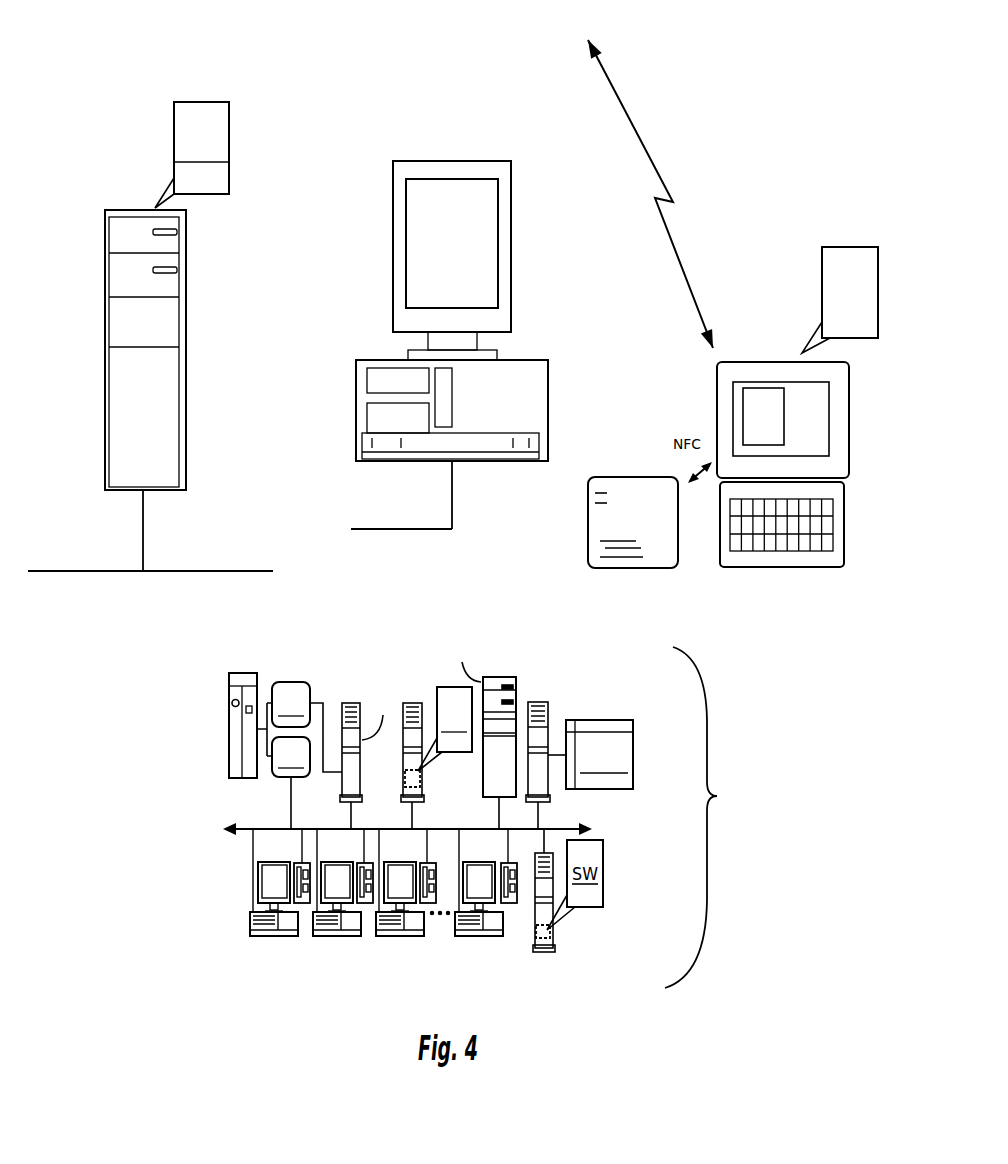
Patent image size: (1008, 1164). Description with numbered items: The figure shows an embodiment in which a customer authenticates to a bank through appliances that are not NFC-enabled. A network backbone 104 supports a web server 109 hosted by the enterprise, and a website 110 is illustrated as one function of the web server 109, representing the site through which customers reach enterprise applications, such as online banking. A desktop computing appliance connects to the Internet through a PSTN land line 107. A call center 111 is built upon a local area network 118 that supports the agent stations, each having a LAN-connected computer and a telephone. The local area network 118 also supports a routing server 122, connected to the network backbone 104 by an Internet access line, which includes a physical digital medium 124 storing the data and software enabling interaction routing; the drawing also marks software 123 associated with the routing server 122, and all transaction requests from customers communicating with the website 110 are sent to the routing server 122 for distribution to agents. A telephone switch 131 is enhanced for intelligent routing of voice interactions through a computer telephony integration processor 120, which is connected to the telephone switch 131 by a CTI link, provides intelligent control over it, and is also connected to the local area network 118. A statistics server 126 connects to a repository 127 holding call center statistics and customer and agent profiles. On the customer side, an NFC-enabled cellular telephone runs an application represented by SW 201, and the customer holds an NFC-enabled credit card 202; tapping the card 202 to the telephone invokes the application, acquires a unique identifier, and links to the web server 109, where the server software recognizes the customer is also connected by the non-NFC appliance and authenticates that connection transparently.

The network backbone 104 is at (220, 571).
The PSTN land line 107 is at (410, 528).
The web server 109 is at (105, 275).
The website 110 is at (183, 101).
The call center 111 is at (703, 817).
The local area network 118 is at (240, 827).
The computer telephony integration processor 120 is at (287, 778).
The routing server 122 is at (413, 766).
The software 123 is at (437, 705).
The physical digital medium 124 is at (422, 779).
The statistics server 126 is at (535, 700).
The repository 127 is at (603, 786).
The telephone switch 131 is at (228, 720).
The SW 201 is at (845, 246).
The credit card 202 is at (620, 476).